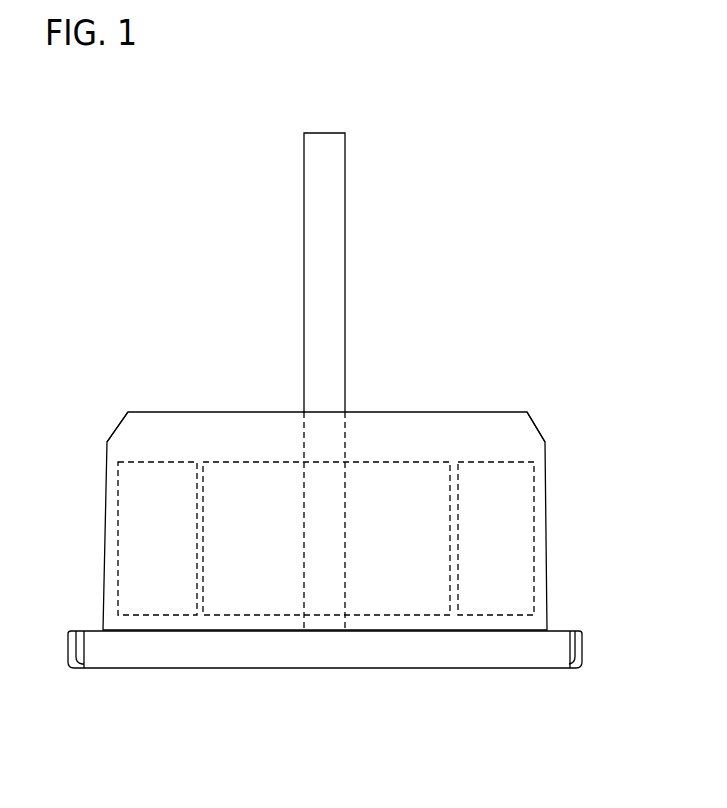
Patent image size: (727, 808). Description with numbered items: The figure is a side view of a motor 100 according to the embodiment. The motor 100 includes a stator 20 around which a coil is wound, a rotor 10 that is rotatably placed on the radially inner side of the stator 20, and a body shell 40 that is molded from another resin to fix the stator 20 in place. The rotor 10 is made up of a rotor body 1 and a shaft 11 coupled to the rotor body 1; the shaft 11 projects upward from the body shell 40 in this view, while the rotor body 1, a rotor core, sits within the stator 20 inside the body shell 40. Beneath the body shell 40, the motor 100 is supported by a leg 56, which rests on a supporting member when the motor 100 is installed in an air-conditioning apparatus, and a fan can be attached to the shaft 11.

The motor 100 is at (126, 287).
The rotor 10 is at (426, 210).
The shaft 11 is at (345, 232).
The rotor body 1 is at (410, 462).
The stator 20 is at (495, 462).
The body shell 40 is at (548, 484).
The leg 56 is at (546, 668).